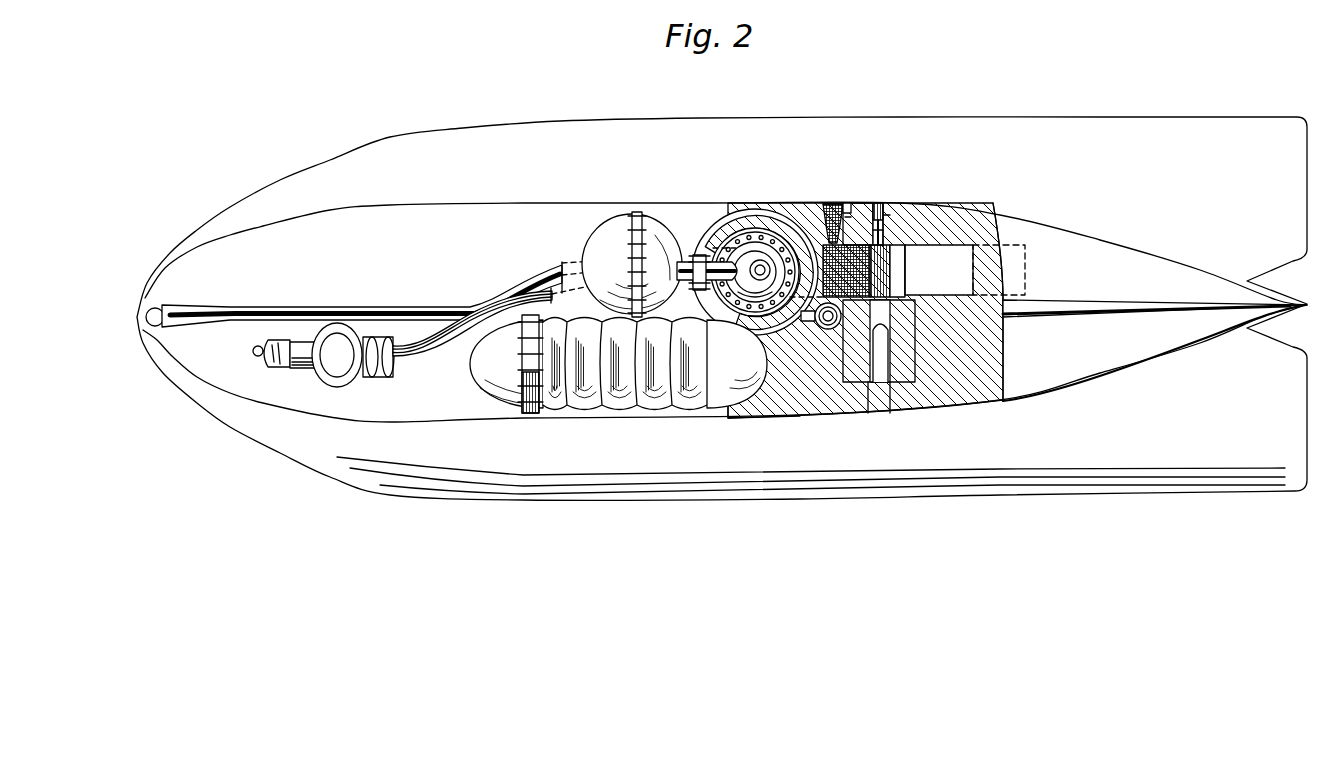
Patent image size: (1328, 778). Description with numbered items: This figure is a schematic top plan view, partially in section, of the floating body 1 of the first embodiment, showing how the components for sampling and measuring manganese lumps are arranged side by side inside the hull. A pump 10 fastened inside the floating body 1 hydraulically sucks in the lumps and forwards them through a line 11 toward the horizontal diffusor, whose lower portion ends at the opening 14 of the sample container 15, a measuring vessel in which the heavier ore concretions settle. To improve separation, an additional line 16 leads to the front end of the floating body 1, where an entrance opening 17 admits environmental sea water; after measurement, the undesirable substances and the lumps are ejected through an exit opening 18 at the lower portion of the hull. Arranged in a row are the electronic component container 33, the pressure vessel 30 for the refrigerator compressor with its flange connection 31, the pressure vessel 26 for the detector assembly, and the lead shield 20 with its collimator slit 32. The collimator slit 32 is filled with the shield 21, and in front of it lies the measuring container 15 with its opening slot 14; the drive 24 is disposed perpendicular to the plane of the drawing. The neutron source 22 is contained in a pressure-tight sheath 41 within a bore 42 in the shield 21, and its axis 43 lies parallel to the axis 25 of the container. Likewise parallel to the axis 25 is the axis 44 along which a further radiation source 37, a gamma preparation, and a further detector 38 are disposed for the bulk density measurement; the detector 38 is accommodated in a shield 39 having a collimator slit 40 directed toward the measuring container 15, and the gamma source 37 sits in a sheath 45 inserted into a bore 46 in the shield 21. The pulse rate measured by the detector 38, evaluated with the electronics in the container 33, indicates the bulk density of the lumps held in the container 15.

The floating body 1 is at (463, 213).
The pump 10 is at (304, 366).
The line 11 is at (528, 266).
The opening 14 is at (860, 298).
The sample container 15 is at (892, 275).
The additional line 16 is at (418, 308).
The entrance opening 17 is at (163, 300).
The exit opening 18 is at (955, 255).
The lead shield 20 is at (748, 222).
The shield 21 is at (775, 407).
The neutron source 22 is at (833, 197).
The drive 24 is at (827, 325).
The axis 25 is at (892, 253).
The pressure vessel 26 is at (725, 300).
The pressure vessel 30 is at (602, 233).
The flange connection 31 is at (698, 255).
The collimator slit 32 is at (807, 247).
The electronic component container 33 is at (478, 365).
The further radiation source 37 is at (884, 210).
The further detector 38 is at (878, 370).
The shield 39 is at (885, 315).
The collimator slit 40 is at (935, 355).
The pressure-tight sheath 41 is at (846, 217).
The bore 42 is at (845, 217).
The axis 43 is at (828, 203).
The axis 44 is at (878, 203).
The sheath 45 is at (876, 200).
The bore 46 is at (885, 215).